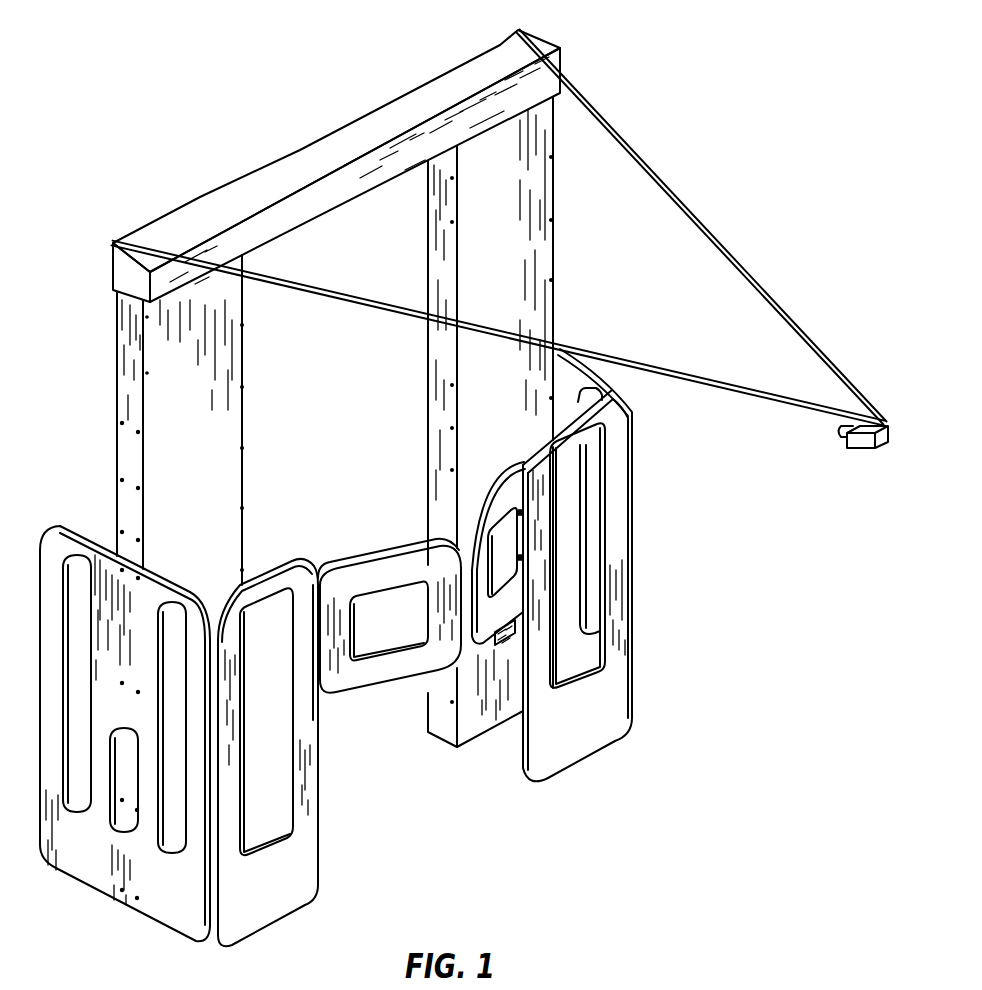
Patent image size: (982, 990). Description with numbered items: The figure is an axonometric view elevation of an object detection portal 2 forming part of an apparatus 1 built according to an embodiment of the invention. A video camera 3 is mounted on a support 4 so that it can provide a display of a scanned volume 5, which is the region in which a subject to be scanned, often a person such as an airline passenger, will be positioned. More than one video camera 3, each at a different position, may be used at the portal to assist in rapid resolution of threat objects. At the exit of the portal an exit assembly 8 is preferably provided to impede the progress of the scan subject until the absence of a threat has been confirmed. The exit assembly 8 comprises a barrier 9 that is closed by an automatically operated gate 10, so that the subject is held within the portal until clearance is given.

The apparatus 1 is at (733, 203).
The object detection portal 2 is at (330, 153).
The video camera 3 is at (848, 441).
The support 4 is at (742, 286).
The scanned volume 5 is at (383, 476).
The exit assembly 8 is at (192, 906).
The barrier 9 is at (310, 857).
The automatically operated gate 10 is at (348, 683).